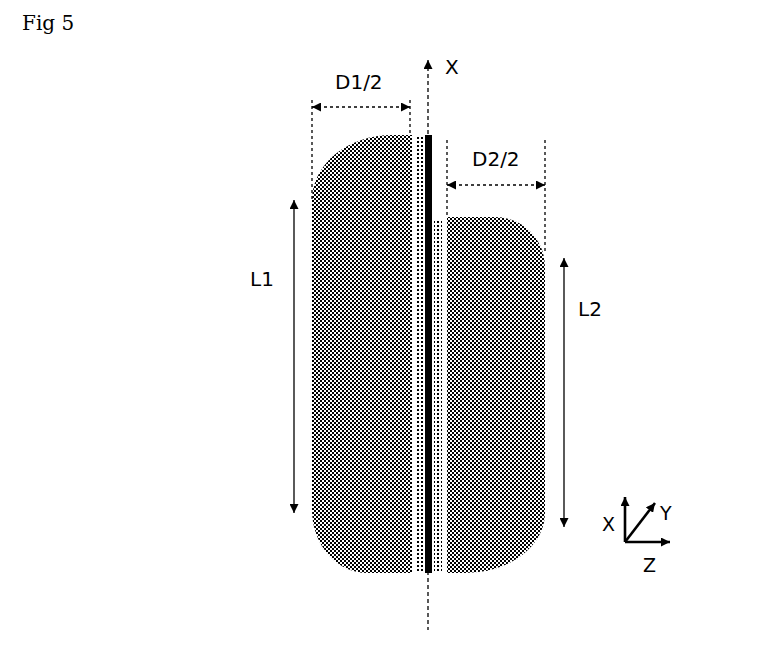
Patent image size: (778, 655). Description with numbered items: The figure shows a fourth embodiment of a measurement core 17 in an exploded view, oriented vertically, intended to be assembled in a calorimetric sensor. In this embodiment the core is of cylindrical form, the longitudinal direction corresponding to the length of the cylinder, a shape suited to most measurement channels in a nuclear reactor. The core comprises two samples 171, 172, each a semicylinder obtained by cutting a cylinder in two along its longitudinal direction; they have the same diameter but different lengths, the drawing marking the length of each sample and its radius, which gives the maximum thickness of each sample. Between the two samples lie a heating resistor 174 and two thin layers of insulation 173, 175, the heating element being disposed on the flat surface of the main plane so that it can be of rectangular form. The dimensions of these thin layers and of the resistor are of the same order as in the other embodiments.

The measurement core 17 is at (640, 168).
The first sample 171 is at (345, 513).
The second sample 172 is at (512, 450).
The first thin layer of insulation 173 is at (415, 568).
The heating resistor 174 is at (432, 155).
The second thin layer of insulation 175 is at (440, 562).